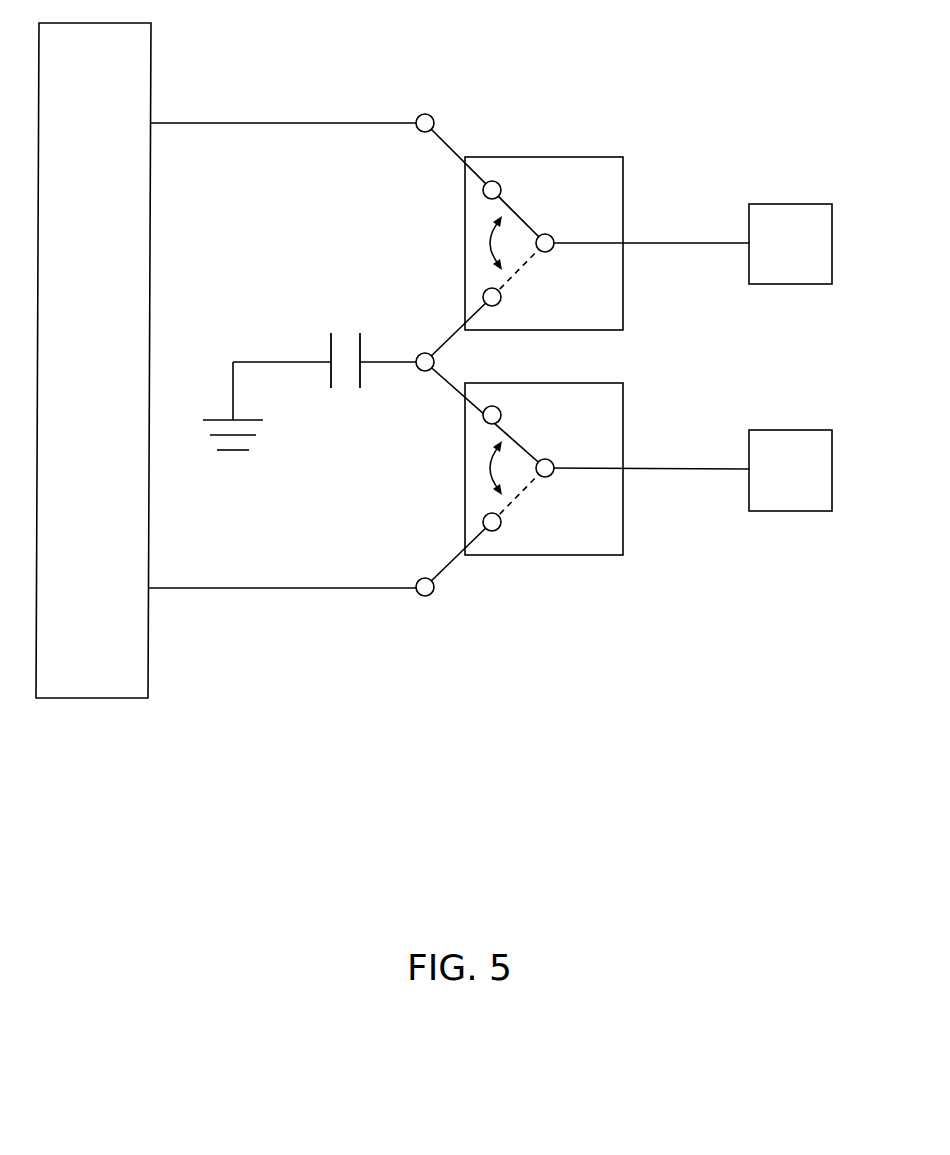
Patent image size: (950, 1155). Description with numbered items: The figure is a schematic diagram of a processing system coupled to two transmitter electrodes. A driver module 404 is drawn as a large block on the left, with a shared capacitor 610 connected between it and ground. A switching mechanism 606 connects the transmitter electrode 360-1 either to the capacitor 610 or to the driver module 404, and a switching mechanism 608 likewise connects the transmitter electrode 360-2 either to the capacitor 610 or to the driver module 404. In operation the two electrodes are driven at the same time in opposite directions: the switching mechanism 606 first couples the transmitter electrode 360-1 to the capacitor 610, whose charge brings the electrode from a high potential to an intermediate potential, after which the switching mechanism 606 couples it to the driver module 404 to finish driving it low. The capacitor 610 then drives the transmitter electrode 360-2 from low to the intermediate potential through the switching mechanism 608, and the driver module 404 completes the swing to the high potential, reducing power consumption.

The driver module 404 is at (113, 362).
The capacitor 610 is at (338, 318).
The switching mechanism 606 is at (540, 330).
The switching mechanism 608 is at (540, 555).
The transmitter electrode 360-1 is at (822, 259).
The transmitter electrode 360-2 is at (822, 486).